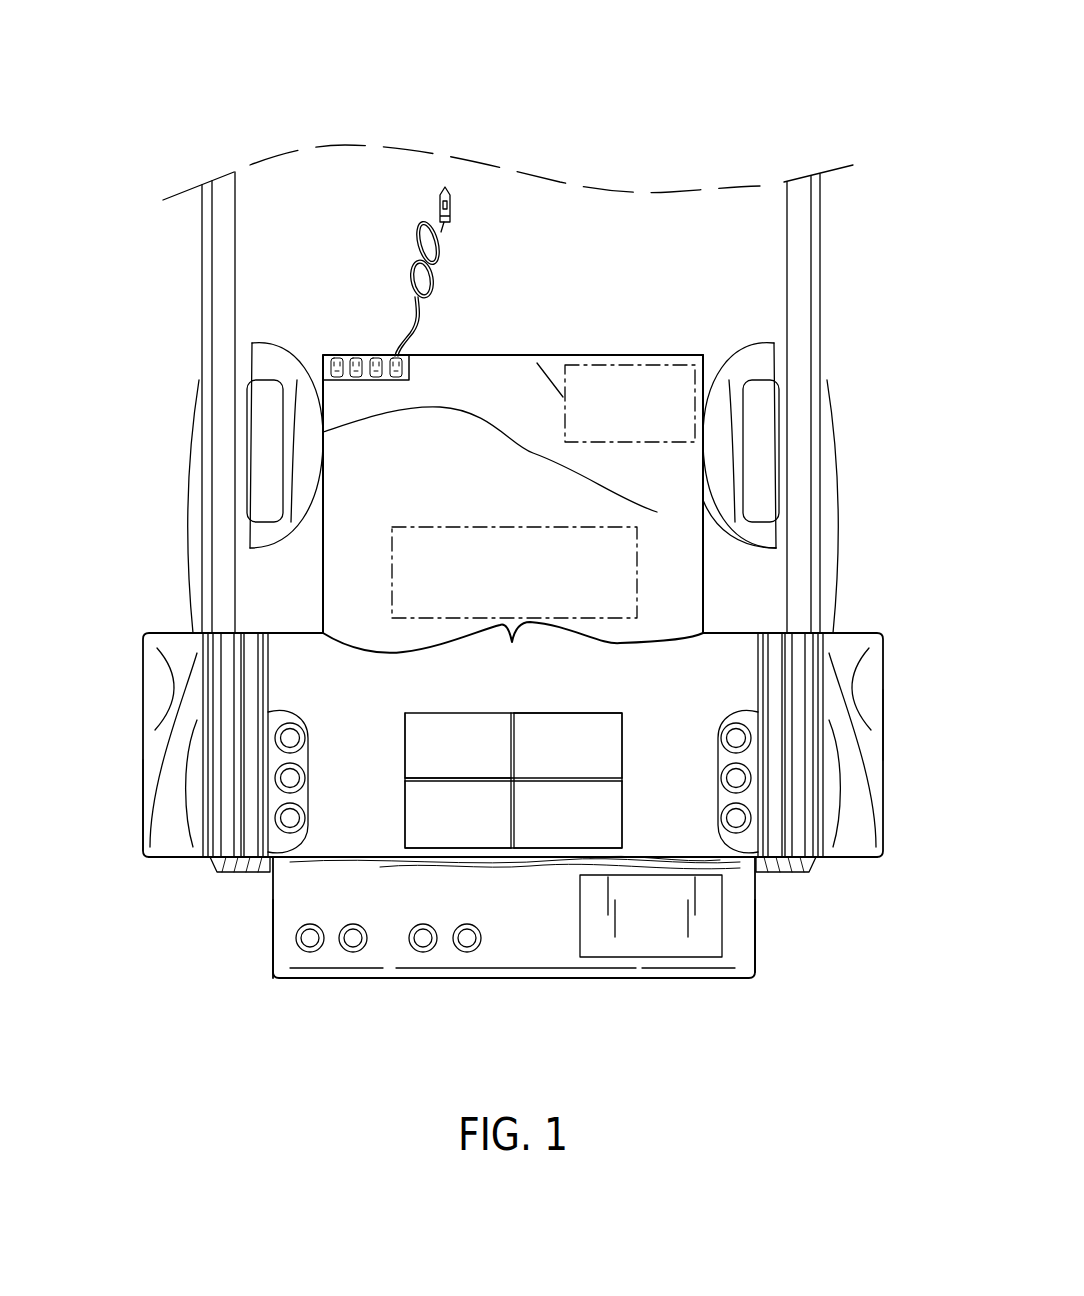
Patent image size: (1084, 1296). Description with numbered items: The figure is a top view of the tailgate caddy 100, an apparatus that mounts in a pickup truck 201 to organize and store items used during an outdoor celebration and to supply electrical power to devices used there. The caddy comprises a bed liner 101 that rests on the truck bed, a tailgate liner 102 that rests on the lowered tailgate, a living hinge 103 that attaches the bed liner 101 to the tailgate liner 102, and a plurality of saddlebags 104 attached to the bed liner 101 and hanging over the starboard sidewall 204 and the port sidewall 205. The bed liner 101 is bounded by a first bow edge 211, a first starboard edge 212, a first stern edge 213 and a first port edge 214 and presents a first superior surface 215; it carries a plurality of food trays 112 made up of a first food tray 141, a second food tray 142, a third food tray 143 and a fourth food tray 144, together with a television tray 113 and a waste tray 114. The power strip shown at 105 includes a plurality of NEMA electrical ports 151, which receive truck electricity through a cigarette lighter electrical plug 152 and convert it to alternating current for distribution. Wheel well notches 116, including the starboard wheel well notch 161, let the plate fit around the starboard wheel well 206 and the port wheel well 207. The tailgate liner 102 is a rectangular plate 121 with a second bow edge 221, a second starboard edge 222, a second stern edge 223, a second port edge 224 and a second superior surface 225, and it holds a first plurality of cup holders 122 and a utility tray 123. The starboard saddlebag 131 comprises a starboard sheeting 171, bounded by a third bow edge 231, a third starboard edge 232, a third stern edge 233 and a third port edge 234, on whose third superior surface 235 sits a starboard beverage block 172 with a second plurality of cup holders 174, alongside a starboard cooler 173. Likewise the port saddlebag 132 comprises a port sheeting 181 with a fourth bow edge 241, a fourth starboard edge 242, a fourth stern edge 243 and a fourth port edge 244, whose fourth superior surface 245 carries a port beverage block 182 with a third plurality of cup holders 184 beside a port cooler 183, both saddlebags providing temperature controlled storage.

The tailgate caddy 100 is at (175, 118).
The bed liner 101 is at (650, 465).
The tailgate liner 102 is at (323, 633).
The living hinge 103 is at (320, 863).
The saddlebags 104 is at (130, 640).
The power strip 105 is at (340, 340).
The food trays 112 is at (563, 730).
The television tray 113 is at (448, 538).
The waste tray 114 is at (643, 383).
The wheel well notches 116 is at (513, 650).
The rectangular plate 121 is at (525, 968).
The first plurality of cup holders 122 is at (480, 906).
The utility tray 123 is at (715, 940).
The starboard saddlebag 131 is at (885, 710).
The port saddlebag 132 is at (143, 813).
The first food tray 141 is at (440, 828).
The second food tray 142 is at (437, 750).
The third food tray 143 is at (540, 742).
The fourth food tray 144 is at (583, 803).
The NEMA electrical ports 151 is at (362, 363).
The cigarette lighter electrical plug 152 is at (432, 252).
The starboard wheel well notch 161 is at (703, 633).
The starboard sheeting 171 is at (795, 851).
The starboard beverage block 172 is at (748, 712).
The starboard cooler 173 is at (865, 800).
The second plurality of cup holders 174 is at (735, 818).
The port sheeting 181 is at (230, 867).
The port beverage block 182 is at (293, 730).
The port cooler 183 is at (180, 753).
The third plurality of cup holders 184 is at (307, 817).
The pickup truck 201 is at (747, 387).
The starboard sidewall 204 is at (807, 525).
The port sidewall 205 is at (222, 585).
The starboard wheel well 206 is at (723, 567).
The port wheel well 207 is at (263, 430).
The first bow edge 211 is at (527, 350).
The first starboard edge 212 is at (705, 478).
The first stern edge 213 is at (630, 860).
The first port edge 214 is at (323, 470).
The first superior surface 215 is at (543, 393).
The second bow edge 221 is at (498, 860).
The second starboard edge 222 is at (755, 966).
The second stern edge 223 is at (580, 967).
The second port edge 224 is at (273, 943).
The second superior surface 225 is at (498, 945).
The third bow edge 231 is at (823, 633).
The third starboard edge 232 is at (885, 670).
The third stern edge 233 is at (870, 858).
The third port edge 234 is at (758, 658).
The third superior surface 235 is at (860, 747).
The fourth bow edge 241 is at (160, 633).
The fourth starboard edge 242 is at (268, 670).
The fourth stern edge 243 is at (175, 858).
The fourth port edge 244 is at (143, 717).
The fourth superior surface 245 is at (170, 827).